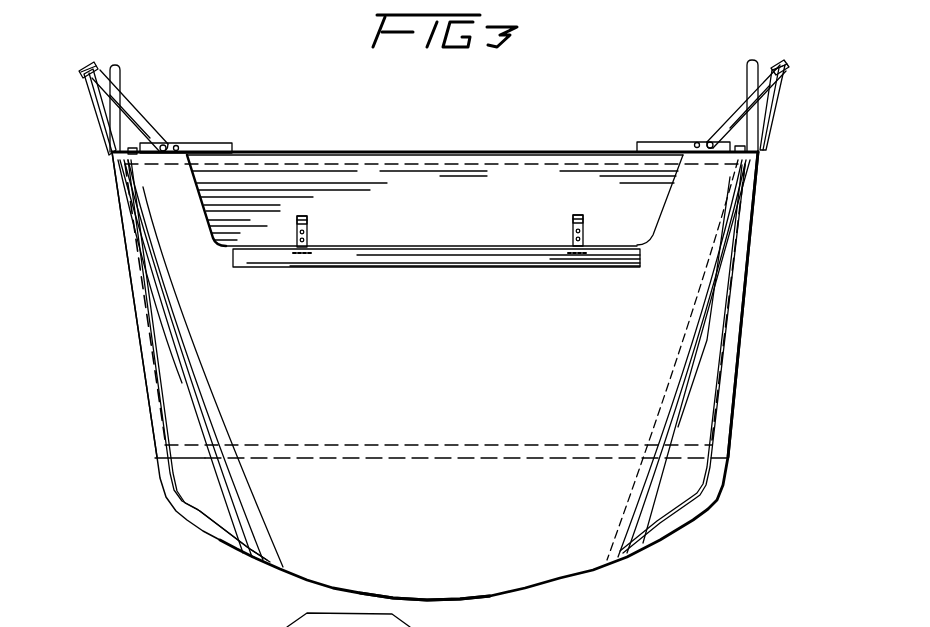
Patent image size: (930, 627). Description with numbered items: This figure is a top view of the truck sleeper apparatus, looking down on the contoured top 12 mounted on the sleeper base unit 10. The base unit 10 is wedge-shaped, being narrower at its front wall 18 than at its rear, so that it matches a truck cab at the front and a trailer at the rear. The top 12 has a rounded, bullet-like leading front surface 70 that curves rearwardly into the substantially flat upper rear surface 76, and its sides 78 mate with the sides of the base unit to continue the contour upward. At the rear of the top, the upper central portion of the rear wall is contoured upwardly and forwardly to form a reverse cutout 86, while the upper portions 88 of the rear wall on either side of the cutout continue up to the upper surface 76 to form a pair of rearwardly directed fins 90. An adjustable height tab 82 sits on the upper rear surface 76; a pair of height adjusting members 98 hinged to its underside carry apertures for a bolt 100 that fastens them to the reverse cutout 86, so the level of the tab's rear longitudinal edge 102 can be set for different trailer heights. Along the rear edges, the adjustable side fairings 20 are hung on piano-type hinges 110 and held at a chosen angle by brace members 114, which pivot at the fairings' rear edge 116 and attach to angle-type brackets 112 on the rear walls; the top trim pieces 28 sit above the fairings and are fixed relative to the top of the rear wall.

The sleeper base unit 10 is at (455, 457).
The contoured top 12 is at (652, 546).
The front wall 18 is at (558, 456).
The adjustable side fairings 20 is at (92, 115).
The top trim pieces 28 is at (117, 66).
The leading front surface 70 is at (511, 572).
The upper rear surface 76 is at (601, 308).
The sides of the top 78 is at (143, 351).
The adjustable height tab 82 is at (503, 268).
The reverse cutout 86 is at (455, 185).
The upper portions of the rear wall 88 is at (314, 620).
The rearwardly directed fins 90 is at (160, 192).
The height adjusting members 98 is at (308, 240).
The bolt 100 is at (308, 221).
The rear longitudinal edge 102 is at (465, 243).
The piano-type hinges 110 is at (135, 146).
The angle-type brackets 112 is at (212, 143).
The brace members 114 is at (135, 112).
The rear edge 116 is at (92, 66).